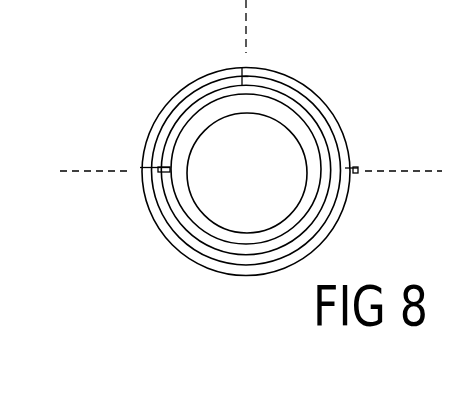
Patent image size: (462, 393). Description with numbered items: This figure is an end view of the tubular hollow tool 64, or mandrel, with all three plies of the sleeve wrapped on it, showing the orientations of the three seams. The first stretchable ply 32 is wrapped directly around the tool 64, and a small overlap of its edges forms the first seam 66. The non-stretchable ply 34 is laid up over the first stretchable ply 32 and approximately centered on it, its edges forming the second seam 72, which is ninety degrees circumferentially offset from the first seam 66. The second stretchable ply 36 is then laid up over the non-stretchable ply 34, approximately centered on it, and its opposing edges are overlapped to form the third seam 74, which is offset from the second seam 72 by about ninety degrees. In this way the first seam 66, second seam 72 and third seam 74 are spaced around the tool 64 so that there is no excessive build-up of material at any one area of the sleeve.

The first stretchable ply 32 is at (182, 125).
The non-stretchable ply 34 is at (178, 112).
The second stretchable ply 36 is at (277, 75).
The tool 64 is at (307, 208).
The first seam 66 is at (142, 167).
The second seam 72 is at (242, 69).
The third seam 74 is at (352, 168).